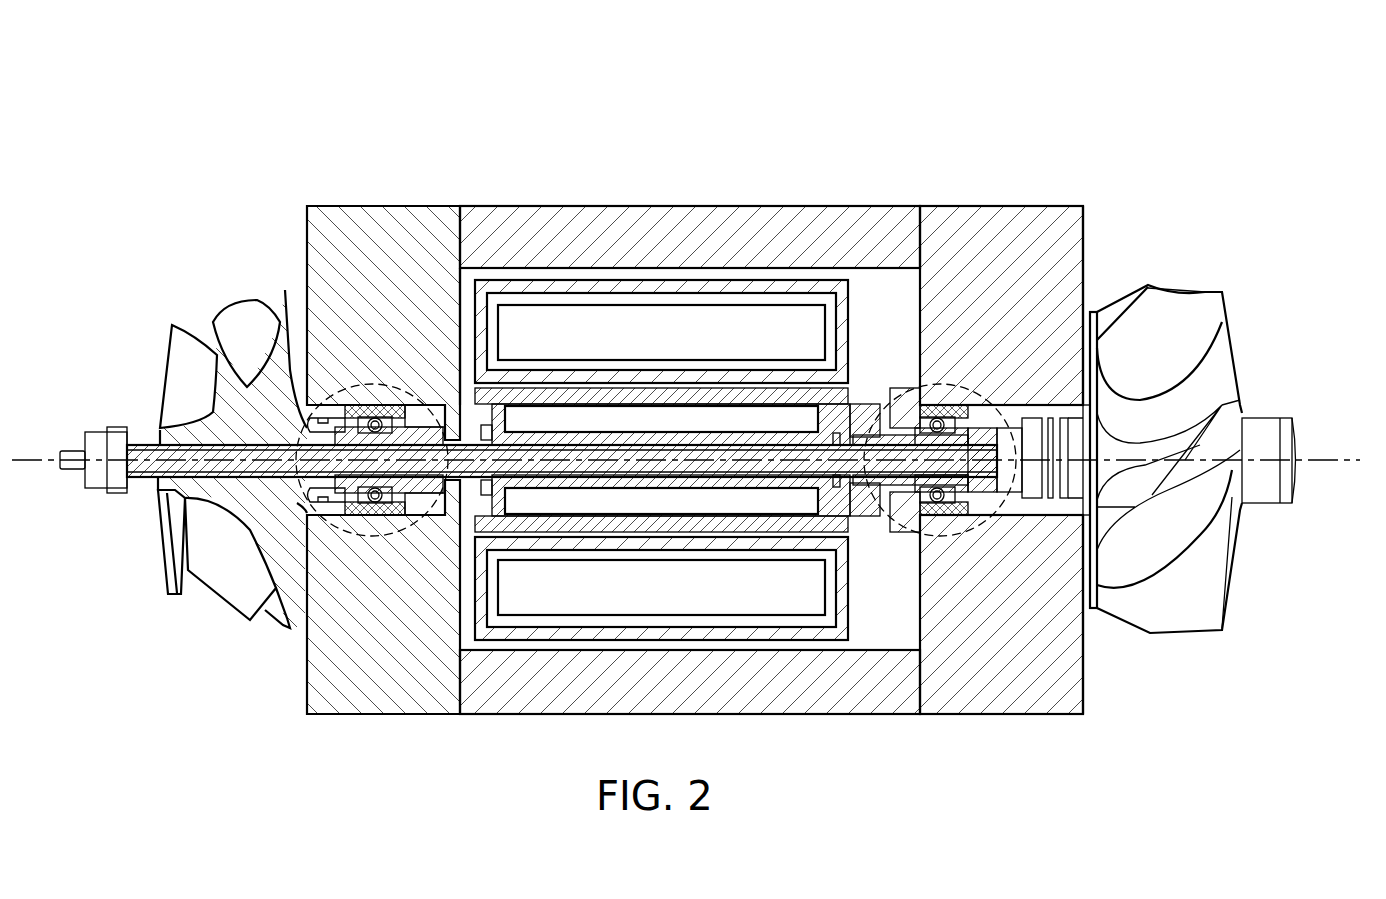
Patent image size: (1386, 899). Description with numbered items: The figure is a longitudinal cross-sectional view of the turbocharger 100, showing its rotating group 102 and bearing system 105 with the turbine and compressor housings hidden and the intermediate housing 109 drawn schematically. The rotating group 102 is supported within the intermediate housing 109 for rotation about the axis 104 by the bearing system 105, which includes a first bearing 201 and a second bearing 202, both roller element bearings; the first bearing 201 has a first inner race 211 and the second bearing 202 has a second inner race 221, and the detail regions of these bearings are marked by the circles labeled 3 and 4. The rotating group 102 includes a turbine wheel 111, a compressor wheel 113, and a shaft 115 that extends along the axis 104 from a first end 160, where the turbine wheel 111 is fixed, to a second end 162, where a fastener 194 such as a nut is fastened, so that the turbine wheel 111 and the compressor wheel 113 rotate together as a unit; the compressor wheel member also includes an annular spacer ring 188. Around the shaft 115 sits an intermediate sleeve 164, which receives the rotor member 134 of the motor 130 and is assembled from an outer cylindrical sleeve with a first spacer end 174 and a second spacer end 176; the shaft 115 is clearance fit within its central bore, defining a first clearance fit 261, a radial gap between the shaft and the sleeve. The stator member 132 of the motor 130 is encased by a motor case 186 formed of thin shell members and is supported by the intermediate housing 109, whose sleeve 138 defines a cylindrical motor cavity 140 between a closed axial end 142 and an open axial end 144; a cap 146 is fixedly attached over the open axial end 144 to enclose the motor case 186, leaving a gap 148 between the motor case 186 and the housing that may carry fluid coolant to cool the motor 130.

The turbocharger 100 is at (692, 381).
The rotating group 102 is at (206, 459).
The axis 104 is at (1330, 455).
The bearing system 105 is at (960, 528).
The intermediate housing 109 is at (730, 408).
The turbine wheel 111 is at (1170, 622).
The compressor wheel 113 is at (175, 538).
The shaft 115 is at (669, 459).
The motor 130 is at (687, 433).
The stator member 132 is at (687, 460).
The rotor member 134 is at (595, 415).
The sleeve 138 is at (975, 207).
The motor cavity 140 is at (920, 316).
The closed axial end 142 is at (1083, 258).
The open axial end 144 is at (460, 313).
The cap 146 is at (353, 209).
The gap 148 is at (570, 651).
The first end 160 is at (1292, 440).
The second end 162 is at (75, 455).
The intermediate sleeve 164 is at (650, 523).
The first spacer end 174 is at (860, 500).
The second spacer end 176 is at (455, 505).
The motor case 186 is at (850, 336).
The spacer ring 188 is at (335, 495).
The fastener 194 is at (95, 488).
The first bearing 201 is at (990, 412).
The second bearing 202 is at (340, 410).
The first inner race 211 is at (890, 440).
The second inner race 221 is at (432, 428).
The first clearance fit 261 is at (680, 445).
The detail circle of FIG. 3 is at (975, 400).
The detail circle of FIG. 4 is at (410, 405).